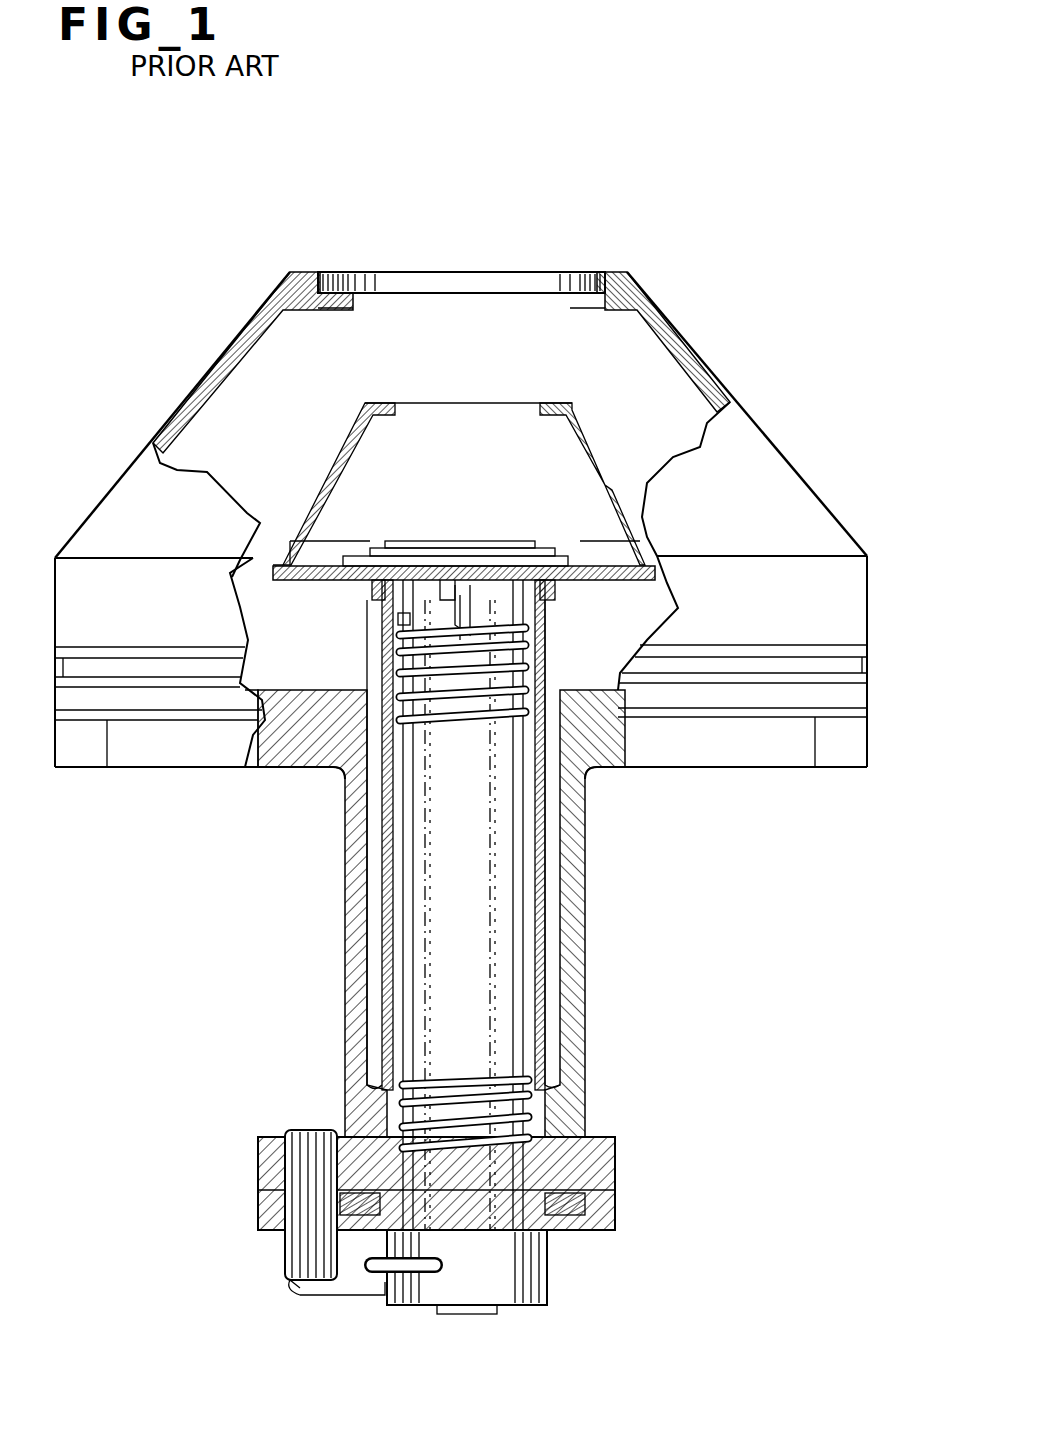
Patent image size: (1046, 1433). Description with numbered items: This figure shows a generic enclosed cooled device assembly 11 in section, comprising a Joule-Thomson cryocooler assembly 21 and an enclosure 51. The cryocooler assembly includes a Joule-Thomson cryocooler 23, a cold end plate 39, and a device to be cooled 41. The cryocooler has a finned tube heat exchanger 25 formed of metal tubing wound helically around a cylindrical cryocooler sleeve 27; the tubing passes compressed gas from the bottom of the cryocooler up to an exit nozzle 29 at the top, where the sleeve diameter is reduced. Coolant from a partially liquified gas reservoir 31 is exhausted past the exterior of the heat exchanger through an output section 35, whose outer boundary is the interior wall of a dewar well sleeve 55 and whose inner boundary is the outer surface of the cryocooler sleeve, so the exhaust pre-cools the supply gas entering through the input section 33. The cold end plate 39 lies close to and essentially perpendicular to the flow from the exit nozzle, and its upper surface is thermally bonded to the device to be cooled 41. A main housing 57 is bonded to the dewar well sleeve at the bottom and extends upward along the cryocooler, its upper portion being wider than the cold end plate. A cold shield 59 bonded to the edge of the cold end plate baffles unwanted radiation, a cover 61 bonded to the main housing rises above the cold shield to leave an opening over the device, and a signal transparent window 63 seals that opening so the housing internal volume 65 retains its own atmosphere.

The cooled device assembly 11 is at (755, 350).
The Joule-Thomson cryocooler assembly 21 is at (440, 530).
The Joule-Thomson cryocooler 23 is at (478, 853).
The finned tube heat exchanger 25 is at (465, 737).
The cryocooler sleeve 27 is at (398, 620).
The exit nozzle 29 is at (470, 600).
The partially liquified gas reservoir 31 is at (455, 580).
The input section 33 is at (400, 585).
The output section 35 is at (400, 837).
The cold end plate 39 is at (628, 583).
The device to be cooled 41 is at (505, 540).
The enclosure 51 is at (805, 460).
The dewar well sleeve 55 is at (545, 835).
The main housing 57 is at (346, 905).
The cold shield 59 is at (573, 412).
The cover 61 is at (178, 387).
The window 63 is at (459, 268).
The housing internal volume 65 is at (378, 372).